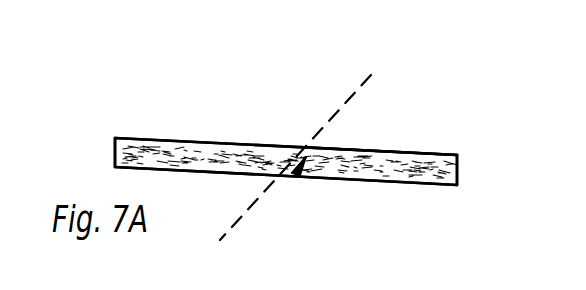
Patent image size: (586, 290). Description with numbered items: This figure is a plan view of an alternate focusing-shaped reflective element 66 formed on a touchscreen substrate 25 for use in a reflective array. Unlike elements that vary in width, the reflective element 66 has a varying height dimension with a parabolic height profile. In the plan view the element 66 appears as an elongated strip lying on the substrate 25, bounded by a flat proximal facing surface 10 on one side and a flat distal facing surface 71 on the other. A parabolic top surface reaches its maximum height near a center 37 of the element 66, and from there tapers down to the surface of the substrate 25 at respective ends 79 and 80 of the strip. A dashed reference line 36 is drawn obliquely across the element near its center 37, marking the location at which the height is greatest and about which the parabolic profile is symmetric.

The touchscreen substrate 25 is at (188, 104).
The cut line 36 is at (341, 112).
The center of the element 37 is at (300, 182).
The end of the element 79 is at (113, 153).
The focusing-shaped reflective element 66 is at (242, 143).
The distal facing surface 71 is at (390, 150).
The end of the element 80 is at (458, 172).
The bottom surface 10 is at (355, 183).